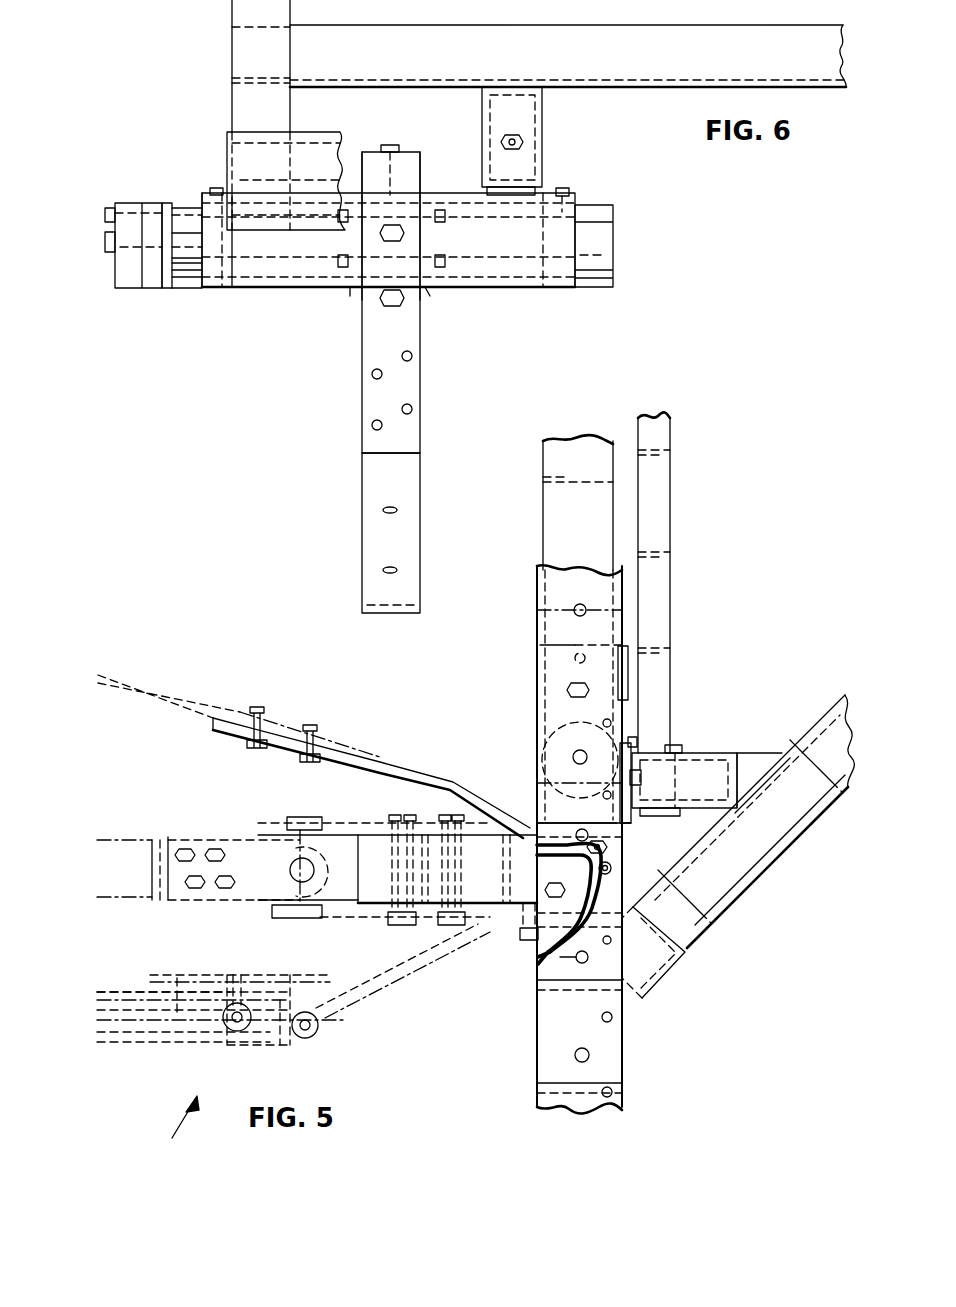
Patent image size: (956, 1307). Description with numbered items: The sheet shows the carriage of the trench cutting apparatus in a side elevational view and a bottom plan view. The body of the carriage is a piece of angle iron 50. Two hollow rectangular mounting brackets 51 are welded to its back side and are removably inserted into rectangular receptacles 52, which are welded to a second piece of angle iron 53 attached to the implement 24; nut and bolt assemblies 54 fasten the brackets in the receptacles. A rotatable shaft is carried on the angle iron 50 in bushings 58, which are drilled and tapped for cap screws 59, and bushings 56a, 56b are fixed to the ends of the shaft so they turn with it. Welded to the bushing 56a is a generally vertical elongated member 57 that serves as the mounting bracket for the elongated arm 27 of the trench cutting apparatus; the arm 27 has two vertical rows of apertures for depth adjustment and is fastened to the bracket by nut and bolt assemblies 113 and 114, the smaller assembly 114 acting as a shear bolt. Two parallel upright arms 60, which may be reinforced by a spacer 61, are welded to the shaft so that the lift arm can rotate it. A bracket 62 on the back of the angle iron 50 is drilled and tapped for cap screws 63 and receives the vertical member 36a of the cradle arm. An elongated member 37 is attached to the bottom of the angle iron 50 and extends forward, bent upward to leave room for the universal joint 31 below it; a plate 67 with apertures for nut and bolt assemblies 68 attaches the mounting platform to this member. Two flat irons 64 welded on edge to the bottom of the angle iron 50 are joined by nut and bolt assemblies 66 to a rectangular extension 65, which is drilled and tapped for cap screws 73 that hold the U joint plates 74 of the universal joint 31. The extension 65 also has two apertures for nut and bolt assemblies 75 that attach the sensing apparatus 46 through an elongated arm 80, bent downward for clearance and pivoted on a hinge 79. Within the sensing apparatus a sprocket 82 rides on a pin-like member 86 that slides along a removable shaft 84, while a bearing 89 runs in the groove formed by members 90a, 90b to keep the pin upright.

In FIG. 6, the implement 24 is at (236, 98).
In FIG. 5, the implement 24 is at (802, 831).
In FIG. 6, the elongated arm 27 is at (130, 290).
In FIG. 5, the elongated arm 27 is at (612, 1062).
In FIG. 5, the universal joint 31 is at (238, 846).
In FIG. 6, the vertical member 36a is at (421, 171).
In FIG. 5, the vertical member 36a is at (670, 492).
In FIG. 6, the elongated member 37 is at (412, 533).
In FIG. 5, the elongated member 37 is at (440, 777).
In FIG. 5, the sensing apparatus 46 is at (183, 1130).
In FIG. 6, the angle iron 50 is at (280, 270).
In FIG. 5, the angle iron 50 is at (621, 823).
In FIG. 6, the mounting brackets 51 is at (530, 190).
In FIG. 5, the mounting brackets 51 is at (642, 772).
In FIG. 6, the rectangular receptacles 52 is at (540, 145).
In FIG. 5, the rectangular receptacles 52 is at (720, 752).
In FIG. 6, the angle iron 53 is at (572, 29).
In FIG. 5, the angle iron 53 is at (762, 753).
In FIG. 6, the nut and bolt assemblies 54 is at (504, 141).
In FIG. 5, the nut and bolt assemblies 54 is at (682, 748).
In FIG. 6, the bushing 56a is at (183, 290).
In FIG. 6, the bushing 56b is at (597, 277).
In FIG. 6, the elongated member 57 is at (152, 204).
In FIG. 5, the elongated member 57 is at (596, 887).
In FIG. 6, the bushings 58 is at (222, 290).
In FIG. 6, the cap screws 59 is at (216, 188).
In FIG. 5, the cap screws 59 is at (642, 778).
In FIG. 5, the vertically upright arms 60 is at (552, 511).
In FIG. 5, the spacer 61 is at (629, 678).
In FIG. 6, the bracket 62 is at (372, 190).
In FIG. 5, the bracket 62 is at (631, 745).
In FIG. 6, the cap screws 63 is at (387, 147).
In FIG. 6, the flat irons 64 is at (353, 290).
In FIG. 5, the flat irons 64 is at (575, 958).
In FIG. 6, the rectangular extension 65 is at (415, 386).
In FIG. 5, the rectangular extension 65 is at (382, 897).
In FIG. 6, the nut and bolt assemblies 66 is at (343, 265).
In FIG. 5, the nut and bolt assemblies 66 is at (590, 852).
In FIG. 5, the plate 67 is at (172, 695).
In FIG. 5, the nut and bolt assemblies 68 is at (260, 710).
In FIG. 5, the cap screws 73 is at (187, 848).
In FIG. 5, the U joint plates 74 is at (282, 826).
In FIG. 6, the nut and bolt assemblies 75 is at (392, 306).
In FIG. 5, the nut and bolt assemblies 75 is at (520, 942).
In FIG. 5, the hinge 79 is at (316, 1033).
In FIG. 5, the elongated arm 80 is at (416, 962).
In FIG. 5, the sprocket 82 is at (312, 976).
In FIG. 5, the removable shaft 84 is at (173, 1013).
In FIG. 5, the pin-like member 86 is at (238, 978).
In FIG. 5, the bearing 89 is at (237, 1032).
In FIG. 5, the groove member 90a is at (103, 992).
In FIG. 5, the groove member 90b is at (184, 1040).
In FIG. 6, the nut and bolt assembly 113 is at (107, 254).
In FIG. 5, the nut and bolt assembly 113 is at (575, 698).
In FIG. 6, the nut and bolt assembly 114 is at (107, 210).